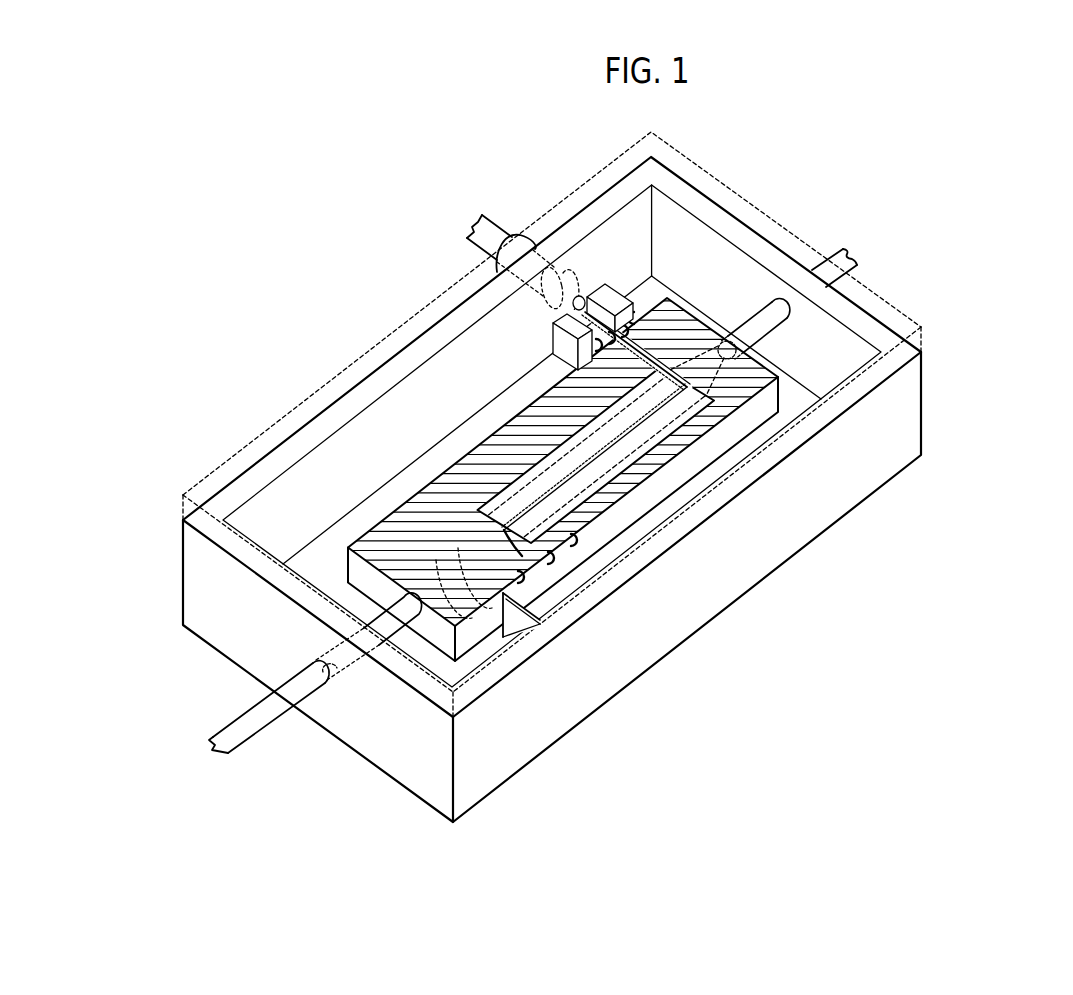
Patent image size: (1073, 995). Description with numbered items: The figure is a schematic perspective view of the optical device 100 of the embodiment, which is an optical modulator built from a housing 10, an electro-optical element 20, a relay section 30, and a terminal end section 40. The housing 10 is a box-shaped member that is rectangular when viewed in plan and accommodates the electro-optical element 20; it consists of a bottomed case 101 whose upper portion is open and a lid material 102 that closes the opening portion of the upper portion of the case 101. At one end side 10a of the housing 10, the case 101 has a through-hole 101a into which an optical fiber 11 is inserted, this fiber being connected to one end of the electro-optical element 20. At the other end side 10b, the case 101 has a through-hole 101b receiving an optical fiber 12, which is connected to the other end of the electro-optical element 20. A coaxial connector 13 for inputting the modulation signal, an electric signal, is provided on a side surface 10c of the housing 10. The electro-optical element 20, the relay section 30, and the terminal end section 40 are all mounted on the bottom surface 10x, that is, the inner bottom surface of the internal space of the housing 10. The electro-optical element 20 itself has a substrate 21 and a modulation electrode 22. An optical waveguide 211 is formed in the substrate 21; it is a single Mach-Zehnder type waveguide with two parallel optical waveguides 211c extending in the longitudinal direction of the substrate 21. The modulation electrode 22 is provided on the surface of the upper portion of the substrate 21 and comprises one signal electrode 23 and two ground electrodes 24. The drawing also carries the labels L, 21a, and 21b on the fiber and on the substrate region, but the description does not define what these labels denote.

The optical device 100 is at (944, 184).
The housing 10 is at (1003, 325).
The case 101 is at (910, 404).
The lid material 102 is at (925, 333).
The one end side 10a is at (890, 322).
The other end side 10b is at (402, 757).
The side surface 10c is at (373, 437).
The bottom surface 10x is at (830, 398).
The through-hole 101a is at (770, 302).
The through-hole 101b is at (336, 670).
The optical fiber 11 is at (835, 248).
The optical fiber 12 is at (240, 748).
The coaxial connector 13 is at (528, 238).
The optical fiber L is at (490, 214).
The electro-optical element 20 is at (650, 304).
The substrate 21 is at (347, 547).
The top surface of substrate 21a is at (693, 297).
The side surface of substrate 21b is at (356, 573).
The optical waveguide 211 is at (694, 426).
The parallel optical waveguides 211c is at (483, 600).
The modulation electrode 22 is at (775, 655).
The signal electrode 23 is at (571, 465).
The ground electrode 24 is at (571, 410).
The relay section 30 is at (592, 270).
The terminal end section 40 is at (543, 597).